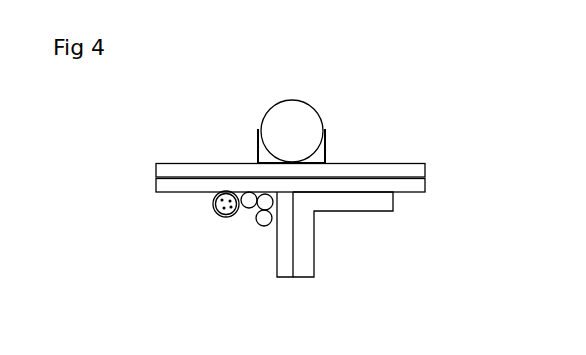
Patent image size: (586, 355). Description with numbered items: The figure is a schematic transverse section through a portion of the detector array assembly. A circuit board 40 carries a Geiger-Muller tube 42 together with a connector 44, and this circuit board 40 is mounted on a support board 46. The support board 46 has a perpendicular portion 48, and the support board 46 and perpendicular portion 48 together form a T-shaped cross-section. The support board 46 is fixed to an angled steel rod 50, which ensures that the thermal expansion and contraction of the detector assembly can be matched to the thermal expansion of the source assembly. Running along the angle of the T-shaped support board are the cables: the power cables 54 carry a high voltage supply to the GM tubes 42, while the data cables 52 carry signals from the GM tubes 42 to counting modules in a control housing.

The circuit board 40 is at (398, 168).
The Geiger-Muller tube 42 is at (297, 115).
The connector 44 is at (320, 154).
The support board 46 is at (422, 188).
The perpendicular portion 48 is at (286, 253).
The angled steel rod 50 is at (377, 205).
The data cable 52 is at (222, 213).
The power cable 54 is at (263, 223).